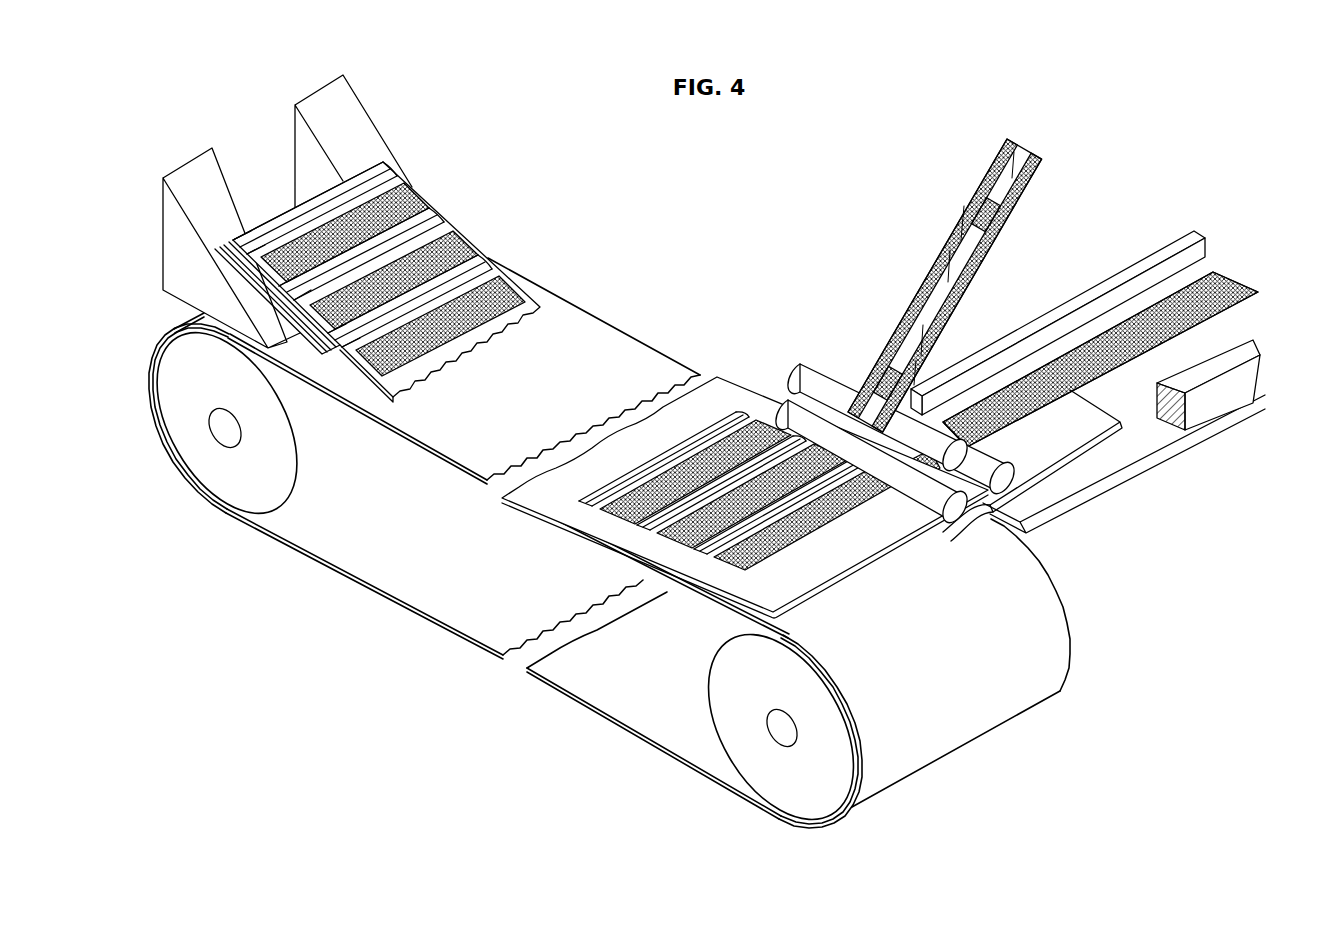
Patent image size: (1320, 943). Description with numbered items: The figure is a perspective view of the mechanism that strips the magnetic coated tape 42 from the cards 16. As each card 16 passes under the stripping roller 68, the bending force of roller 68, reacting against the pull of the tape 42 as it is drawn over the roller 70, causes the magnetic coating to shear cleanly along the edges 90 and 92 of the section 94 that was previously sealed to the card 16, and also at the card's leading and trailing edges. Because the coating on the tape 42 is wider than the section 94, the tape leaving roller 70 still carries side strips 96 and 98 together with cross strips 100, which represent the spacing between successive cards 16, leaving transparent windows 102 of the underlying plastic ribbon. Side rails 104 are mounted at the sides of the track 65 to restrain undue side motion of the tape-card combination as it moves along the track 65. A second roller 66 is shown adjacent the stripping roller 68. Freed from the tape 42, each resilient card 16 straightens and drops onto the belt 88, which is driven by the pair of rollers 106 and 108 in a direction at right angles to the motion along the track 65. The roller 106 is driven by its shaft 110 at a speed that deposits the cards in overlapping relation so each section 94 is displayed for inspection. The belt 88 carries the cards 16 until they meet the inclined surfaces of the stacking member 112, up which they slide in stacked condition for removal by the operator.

The card 16 is at (467, 262).
The tape 42 is at (1065, 285).
The track 65 is at (1055, 505).
The upper pinch roller 66 is at (995, 467).
The stripping roller 68 is at (930, 493).
The roller 70 is at (818, 373).
The belt 88 is at (561, 395).
The edge 90 is at (694, 548).
The edge 92 is at (788, 530).
The section of magnetic coating 94 is at (745, 557).
The side strip 96 is at (996, 253).
The side strip 98 is at (931, 262).
The cross strip 100 is at (993, 211).
The transparent window 102 is at (940, 300).
The side rail 104 is at (1160, 243).
The roller 106 is at (765, 766).
The roller 108 is at (229, 492).
The shaft 110 is at (777, 733).
The stacking member 112 is at (328, 96).